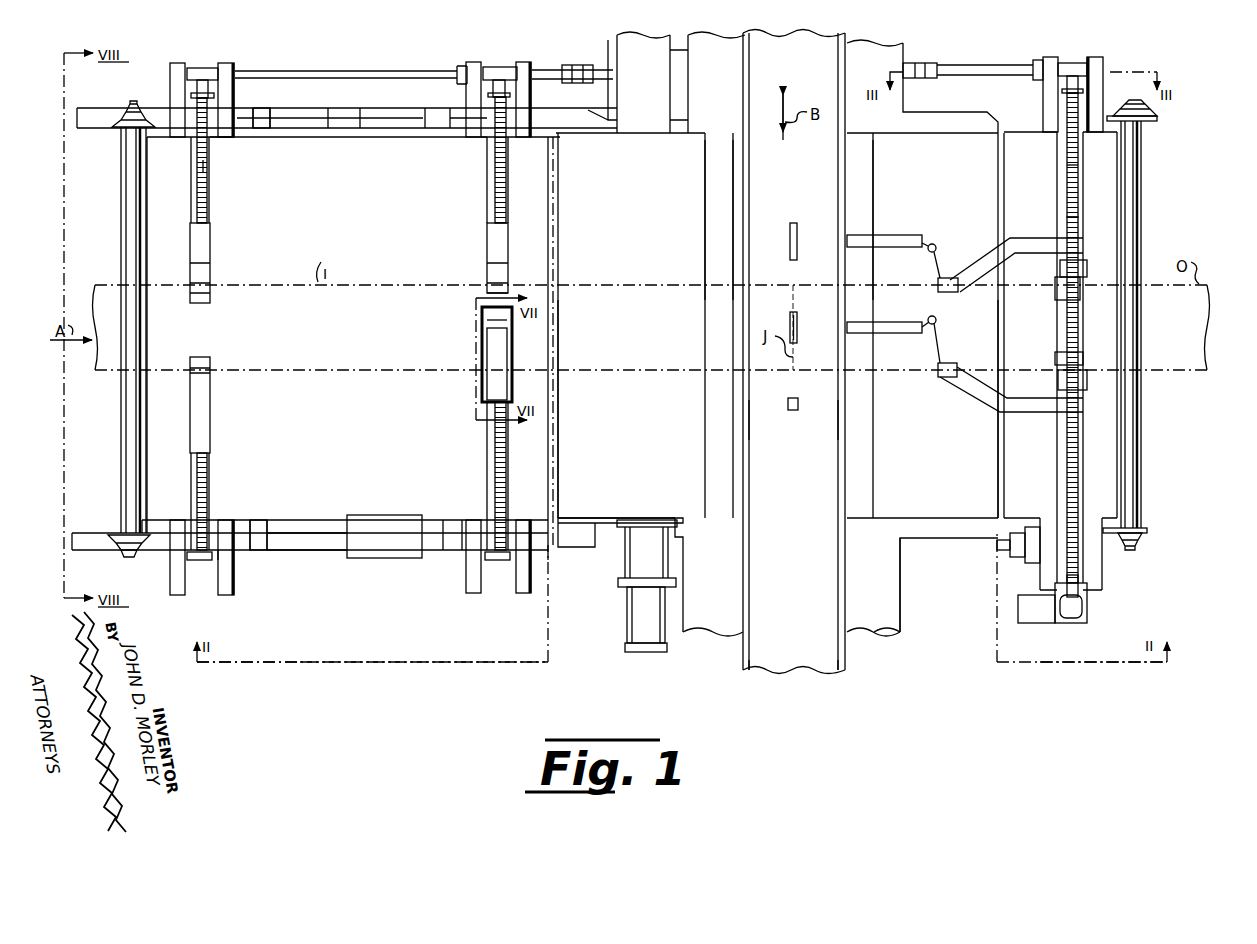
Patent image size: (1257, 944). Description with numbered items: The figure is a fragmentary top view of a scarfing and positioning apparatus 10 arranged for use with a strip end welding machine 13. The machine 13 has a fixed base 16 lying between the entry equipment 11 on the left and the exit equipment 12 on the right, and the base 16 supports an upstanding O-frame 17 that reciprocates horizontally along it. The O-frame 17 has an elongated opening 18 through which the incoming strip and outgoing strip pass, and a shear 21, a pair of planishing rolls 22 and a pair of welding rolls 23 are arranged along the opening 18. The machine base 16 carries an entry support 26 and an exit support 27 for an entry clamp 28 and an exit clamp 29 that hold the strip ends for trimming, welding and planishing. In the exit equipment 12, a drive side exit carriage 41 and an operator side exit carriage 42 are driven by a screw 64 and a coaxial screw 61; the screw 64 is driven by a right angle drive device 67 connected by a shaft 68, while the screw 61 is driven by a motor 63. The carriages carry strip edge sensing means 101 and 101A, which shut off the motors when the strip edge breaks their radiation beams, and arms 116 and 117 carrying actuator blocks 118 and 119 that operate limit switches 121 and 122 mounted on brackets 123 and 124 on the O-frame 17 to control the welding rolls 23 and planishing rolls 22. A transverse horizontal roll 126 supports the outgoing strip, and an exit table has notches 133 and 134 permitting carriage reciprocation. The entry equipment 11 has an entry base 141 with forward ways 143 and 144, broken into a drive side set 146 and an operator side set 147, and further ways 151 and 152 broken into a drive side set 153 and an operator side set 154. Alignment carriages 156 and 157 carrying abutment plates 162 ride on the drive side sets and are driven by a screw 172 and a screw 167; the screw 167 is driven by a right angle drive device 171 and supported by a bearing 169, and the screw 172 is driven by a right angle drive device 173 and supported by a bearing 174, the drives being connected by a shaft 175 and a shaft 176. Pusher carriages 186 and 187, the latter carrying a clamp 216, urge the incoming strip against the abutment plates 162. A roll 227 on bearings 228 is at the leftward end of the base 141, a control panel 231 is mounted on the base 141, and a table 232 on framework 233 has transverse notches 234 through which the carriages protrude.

The scarfing and positioning apparatus 10 is at (432, 690).
The entry equipment 11 is at (345, 630).
The exit equipment 12 is at (1185, 625).
The strip end welding machine 13 is at (877, 672).
The machine base 16 is at (890, 593).
The O-frame 17 is at (796, 655).
The elongated opening 18 is at (840, 407).
The shear 21 is at (800, 412).
The planishing rolls 22 is at (799, 335).
The welding rolls 23 is at (799, 228).
The entry support 26 is at (600, 409).
The exit support 27 is at (950, 409).
The entry clamp 28 is at (713, 150).
The exit clamp 29 is at (872, 163).
The drive side exit carriage 41 is at (1078, 290).
The operator side exit carriage 42 is at (1077, 336).
The screw 61 is at (1080, 480).
The motor 63 is at (1043, 612).
The screw 64 is at (1078, 162).
The right angle drive device 67 is at (1078, 62).
The shaft 68 is at (1010, 65).
The strip edge sensing means 101 is at (1087, 255).
The strip edge sensing means 101A is at (1060, 384).
The arm 116 is at (1040, 243).
The arm 117 is at (1050, 408).
The actuator block 118 is at (944, 278).
The actuator block 119 is at (938, 374).
The limit switch 121 is at (936, 243).
The limit switch 122 is at (937, 320).
The bracket 123 is at (884, 236).
The bracket 124 is at (878, 324).
The transverse horizontal roll 126 is at (1136, 162).
The notch 133 is at (1068, 170).
The notch 134 is at (1058, 467).
The entry base 141 is at (305, 540).
The forward way 143 is at (470, 595).
The forward way 144 is at (517, 595).
The drive side set of forward ways 146 is at (477, 140).
The operator side set of forward ways 147 is at (538, 562).
The further way 151 is at (179, 596).
The further way 152 is at (225, 596).
The drive side set of ways 153 is at (223, 140).
The operator side set of ways 154 is at (236, 566).
The alignment carriage 156 is at (486, 276).
The alignment carriage 157 is at (212, 274).
The abutment plate 162 is at (211, 284).
The screw 167 is at (209, 192).
The bearing 169 is at (197, 560).
The positive right angle drive device 171 is at (200, 68).
The screw 172 is at (500, 172).
The right angle drive device 173 is at (505, 66).
The bearing 174 is at (493, 556).
The shaft 175 is at (350, 70).
The shaft 176 is at (556, 70).
The pusher carriage 186 is at (213, 405).
The pusher carriage 187 is at (477, 375).
The clamp 216 is at (495, 322).
The roll 227 is at (128, 493).
The bearing 228 is at (125, 556).
The control panel 231 is at (385, 548).
The table 232 is at (327, 131).
The framework 233 is at (262, 525).
The transverse notch 234 is at (208, 166).